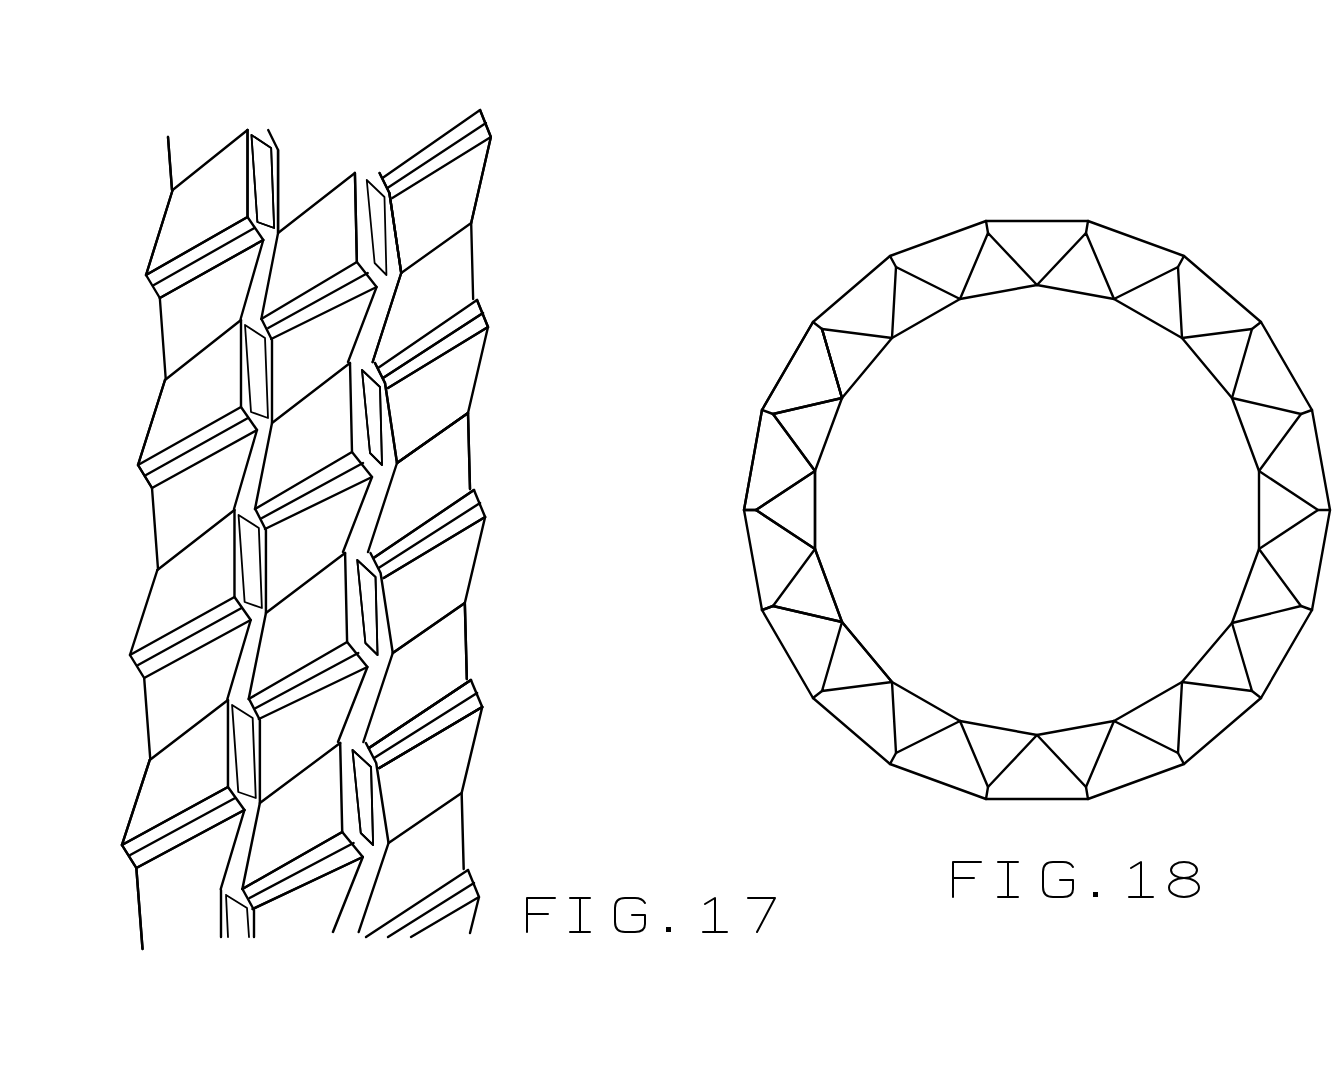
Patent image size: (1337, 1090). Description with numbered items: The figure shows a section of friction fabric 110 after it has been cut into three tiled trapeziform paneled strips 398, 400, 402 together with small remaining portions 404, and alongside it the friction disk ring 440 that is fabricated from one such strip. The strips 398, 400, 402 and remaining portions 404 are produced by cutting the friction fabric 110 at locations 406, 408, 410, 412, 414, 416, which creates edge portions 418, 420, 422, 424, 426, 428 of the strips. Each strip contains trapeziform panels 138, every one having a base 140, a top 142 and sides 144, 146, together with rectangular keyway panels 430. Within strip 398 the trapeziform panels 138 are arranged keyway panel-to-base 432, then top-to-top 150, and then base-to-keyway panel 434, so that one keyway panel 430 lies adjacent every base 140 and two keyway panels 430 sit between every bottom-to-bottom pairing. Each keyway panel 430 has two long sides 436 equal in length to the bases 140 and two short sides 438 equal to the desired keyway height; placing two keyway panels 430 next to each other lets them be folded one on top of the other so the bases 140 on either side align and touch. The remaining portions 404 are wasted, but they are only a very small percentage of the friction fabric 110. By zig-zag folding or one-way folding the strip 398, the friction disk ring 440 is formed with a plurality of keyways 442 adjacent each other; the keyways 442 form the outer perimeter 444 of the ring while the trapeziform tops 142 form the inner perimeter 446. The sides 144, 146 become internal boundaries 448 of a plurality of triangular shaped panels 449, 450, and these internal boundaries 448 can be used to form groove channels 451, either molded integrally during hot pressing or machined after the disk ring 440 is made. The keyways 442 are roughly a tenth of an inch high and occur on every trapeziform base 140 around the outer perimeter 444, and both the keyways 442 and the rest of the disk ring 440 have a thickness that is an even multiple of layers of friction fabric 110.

In FIG. 17, the friction fabric 110 is at (132, 938).
In FIG. 17, the trapeziform panels 138 is at (438, 470).
In FIG. 17, the base 140 is at (472, 322).
In FIG. 17, the top 142 is at (442, 440).
In FIG. 18, the top 142 is at (818, 500).
In FIG. 17, the side 144 is at (402, 380).
In FIG. 17, the side 146 is at (385, 390).
In FIG. 17, the top-to-top arrangement 150 is at (427, 637).
In FIG. 17, the tiled trapeziform paneled strip 398 is at (198, 927).
In FIG. 17, the tiled trapeziform paneled strip 400 is at (318, 927).
In FIG. 17, the tiled trapeziform paneled strip 402 is at (414, 927).
In FIG. 17, the remaining portions 404 is at (268, 188).
In FIG. 17, the cutting location 406 is at (165, 135).
In FIG. 17, the cutting location 408 is at (257, 131).
In FIG. 17, the cutting location 410 is at (275, 131).
In FIG. 17, the cutting location 412 is at (371, 163).
In FIG. 17, the cutting location 414 is at (378, 160).
In FIG. 17, the cutting location 416 is at (513, 158).
In FIG. 17, the edge portion 418 is at (160, 230).
In FIG. 17, the edge portion 420 is at (145, 277).
In FIG. 17, the edge portion 422 is at (258, 296).
In FIG. 17, the edge portion 424 is at (390, 272).
In FIG. 17, the edge portion 426 is at (385, 318).
In FIG. 17, the edge portion 428 is at (392, 368).
In FIG. 17, the keyway panel 430 is at (138, 470).
In FIG. 17, the keyway panel-to-base arrangement 432 is at (420, 690).
In FIG. 17, the base-to-keyway panel arrangement 434 is at (442, 562).
In FIG. 17, the long sides 436 is at (430, 748).
In FIG. 17, the short sides 438 is at (465, 668).
In FIG. 18, the friction disk ring 440 is at (845, 272).
In FIG. 18, the keyways 442 is at (790, 372).
In FIG. 18, the outer perimeter 444 is at (755, 452).
In FIG. 18, the inner perimeter 446 is at (830, 425).
In FIG. 18, the internal boundaries 448 is at (812, 560).
In FIG. 18, the triangular shaped panels 449 is at (822, 588).
In FIG. 18, the triangular shaped panels 450 is at (770, 557).
In FIG. 18, the groove channels 451 is at (765, 522).